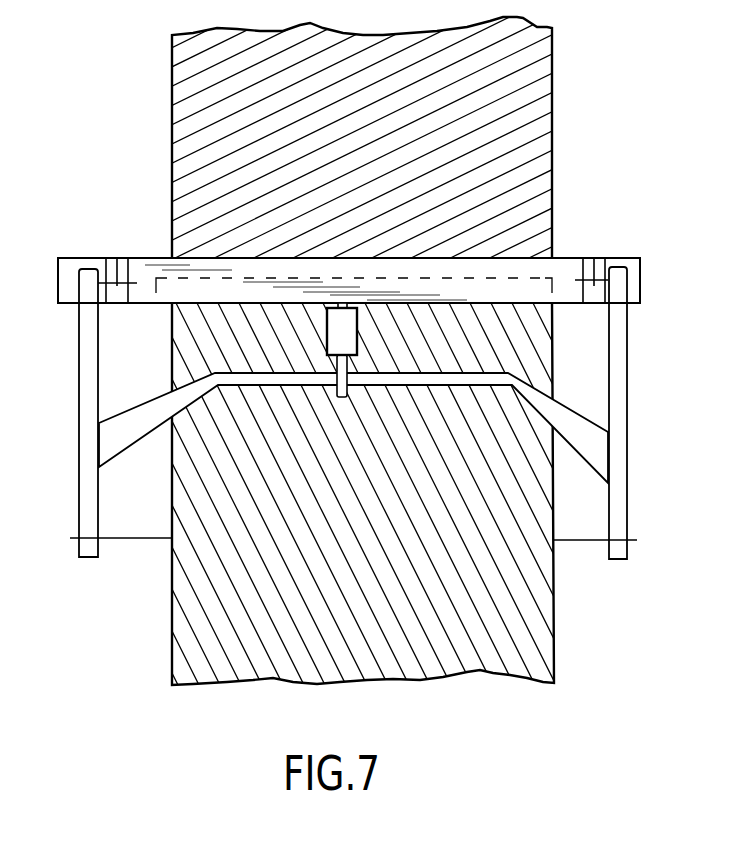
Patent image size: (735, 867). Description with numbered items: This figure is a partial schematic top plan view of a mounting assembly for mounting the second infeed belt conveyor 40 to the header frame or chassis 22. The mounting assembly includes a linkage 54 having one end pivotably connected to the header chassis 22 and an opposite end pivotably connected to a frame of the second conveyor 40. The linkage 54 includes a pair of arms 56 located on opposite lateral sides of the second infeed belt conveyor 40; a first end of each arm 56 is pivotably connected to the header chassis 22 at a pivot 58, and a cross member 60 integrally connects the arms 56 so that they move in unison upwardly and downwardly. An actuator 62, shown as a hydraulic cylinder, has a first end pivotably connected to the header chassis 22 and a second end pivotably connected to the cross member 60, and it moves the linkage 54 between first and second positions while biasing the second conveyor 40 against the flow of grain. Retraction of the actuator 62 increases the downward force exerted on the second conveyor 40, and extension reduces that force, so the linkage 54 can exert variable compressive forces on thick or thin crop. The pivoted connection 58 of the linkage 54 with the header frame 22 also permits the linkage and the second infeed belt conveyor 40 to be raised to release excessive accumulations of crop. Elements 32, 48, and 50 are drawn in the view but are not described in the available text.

The header frame or chassis 22 is at (58, 259).
The wall 32 is at (552, 130).
The second infeed belt conveyor 40 is at (586, 658).
The wall portion 48 is at (555, 617).
The pins 50 is at (75, 538).
The linkage 54 is at (376, 413).
The arms 56 is at (79, 335).
The pivot 58 is at (117, 280).
The cross member 60 is at (585, 418).
The actuator 62 is at (344, 323).